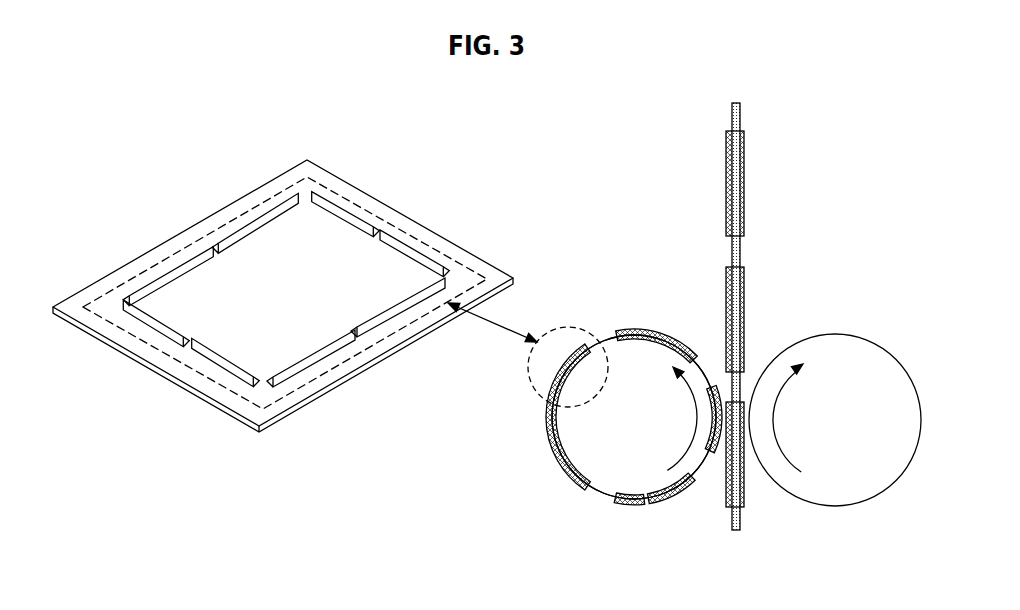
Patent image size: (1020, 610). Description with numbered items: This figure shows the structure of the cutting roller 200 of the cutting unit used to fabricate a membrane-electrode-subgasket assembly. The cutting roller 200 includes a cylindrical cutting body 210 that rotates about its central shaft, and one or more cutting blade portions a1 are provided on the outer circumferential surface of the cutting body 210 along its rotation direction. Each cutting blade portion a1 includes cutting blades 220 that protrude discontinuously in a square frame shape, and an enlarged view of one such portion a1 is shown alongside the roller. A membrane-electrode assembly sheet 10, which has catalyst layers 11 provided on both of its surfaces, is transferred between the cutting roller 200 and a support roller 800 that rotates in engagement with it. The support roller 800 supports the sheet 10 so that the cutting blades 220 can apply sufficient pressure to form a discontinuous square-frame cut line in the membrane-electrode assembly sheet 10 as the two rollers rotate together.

The membrane-electrode assembly sheet 10 is at (753, 147).
The catalyst layers 11 is at (745, 205).
The cutting roller 200 is at (565, 484).
The cutting body 210 is at (157, 253).
The cutting blades 220 is at (345, 217).
The support roller 800 is at (848, 507).
The cutting blade portion a1 is at (507, 328).